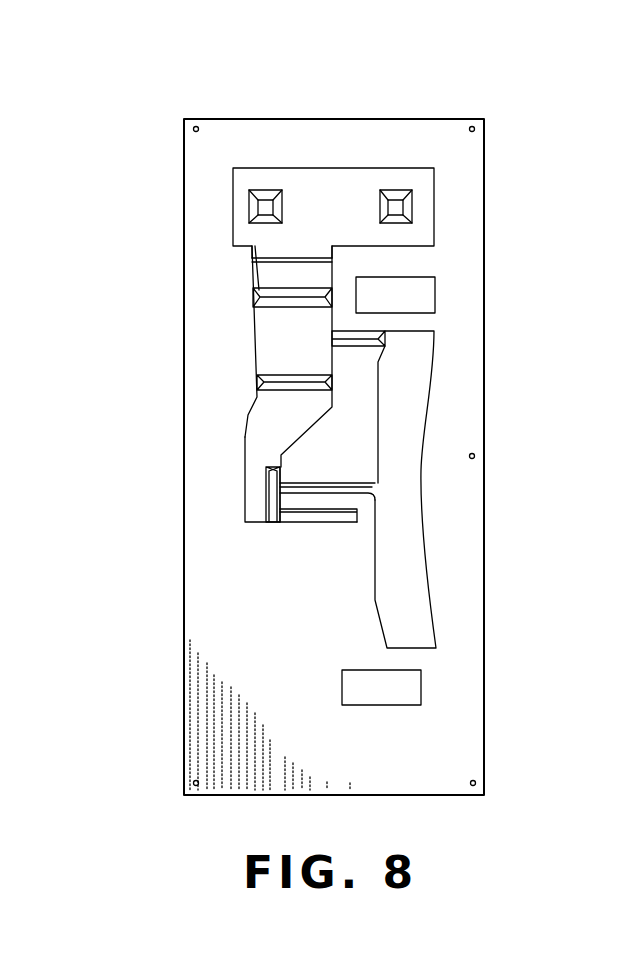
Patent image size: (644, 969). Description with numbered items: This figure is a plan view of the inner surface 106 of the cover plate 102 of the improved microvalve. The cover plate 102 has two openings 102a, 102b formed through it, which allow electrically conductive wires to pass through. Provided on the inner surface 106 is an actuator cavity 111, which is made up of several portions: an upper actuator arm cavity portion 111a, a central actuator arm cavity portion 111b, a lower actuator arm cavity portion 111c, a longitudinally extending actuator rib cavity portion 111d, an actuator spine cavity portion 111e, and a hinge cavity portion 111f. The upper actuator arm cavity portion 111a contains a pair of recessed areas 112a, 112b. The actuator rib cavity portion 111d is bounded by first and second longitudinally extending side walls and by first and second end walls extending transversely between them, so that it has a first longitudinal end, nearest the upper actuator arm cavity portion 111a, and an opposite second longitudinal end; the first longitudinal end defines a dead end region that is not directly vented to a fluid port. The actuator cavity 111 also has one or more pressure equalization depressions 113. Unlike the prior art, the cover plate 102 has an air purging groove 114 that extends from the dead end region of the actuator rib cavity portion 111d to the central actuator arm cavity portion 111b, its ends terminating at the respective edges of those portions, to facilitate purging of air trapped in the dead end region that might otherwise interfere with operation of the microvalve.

The cover plate 102 is at (278, 118).
The inner surface 106 is at (441, 140).
The opening 102a is at (420, 290).
The opening 102b is at (402, 693).
The actuator cavity 111 is at (326, 354).
The upper actuator arm cavity portion 111a is at (324, 205).
The central actuator arm cavity portion 111b is at (268, 335).
The lower actuator arm cavity portion 111c is at (252, 516).
The longitudinally extending actuator rib cavity portion 111d is at (410, 398).
The actuator spine cavity portion 111e is at (333, 482).
The hinge cavity portion 111f is at (307, 515).
The recessed area 112a is at (253, 206).
The recessed area 112b is at (403, 203).
The pressure equalization depression 113 is at (279, 291).
The air purging groove 114 is at (366, 338).